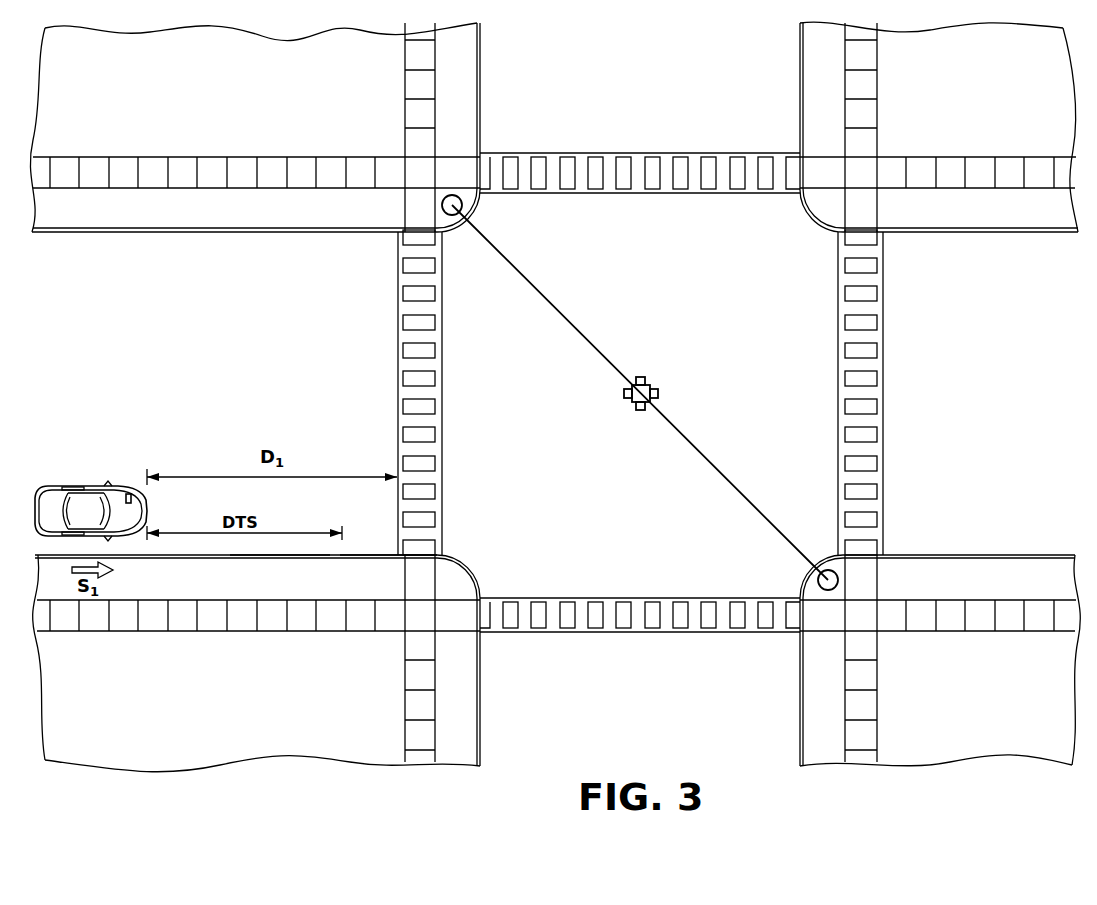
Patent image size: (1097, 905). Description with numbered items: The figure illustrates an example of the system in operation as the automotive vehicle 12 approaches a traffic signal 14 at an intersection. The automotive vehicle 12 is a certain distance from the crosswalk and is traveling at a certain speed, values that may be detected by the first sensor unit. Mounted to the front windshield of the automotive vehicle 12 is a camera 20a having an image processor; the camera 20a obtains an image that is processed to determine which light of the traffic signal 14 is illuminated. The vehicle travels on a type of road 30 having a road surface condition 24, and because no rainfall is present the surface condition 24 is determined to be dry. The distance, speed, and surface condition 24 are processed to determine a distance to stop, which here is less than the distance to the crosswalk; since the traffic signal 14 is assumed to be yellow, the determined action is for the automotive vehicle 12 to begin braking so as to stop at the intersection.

The automotive vehicle 12 is at (66, 486).
The camera 20a is at (125, 492).
The traffic signal 14 is at (653, 383).
The road surface condition 24 is at (280, 544).
The type of road 30 is at (355, 540).